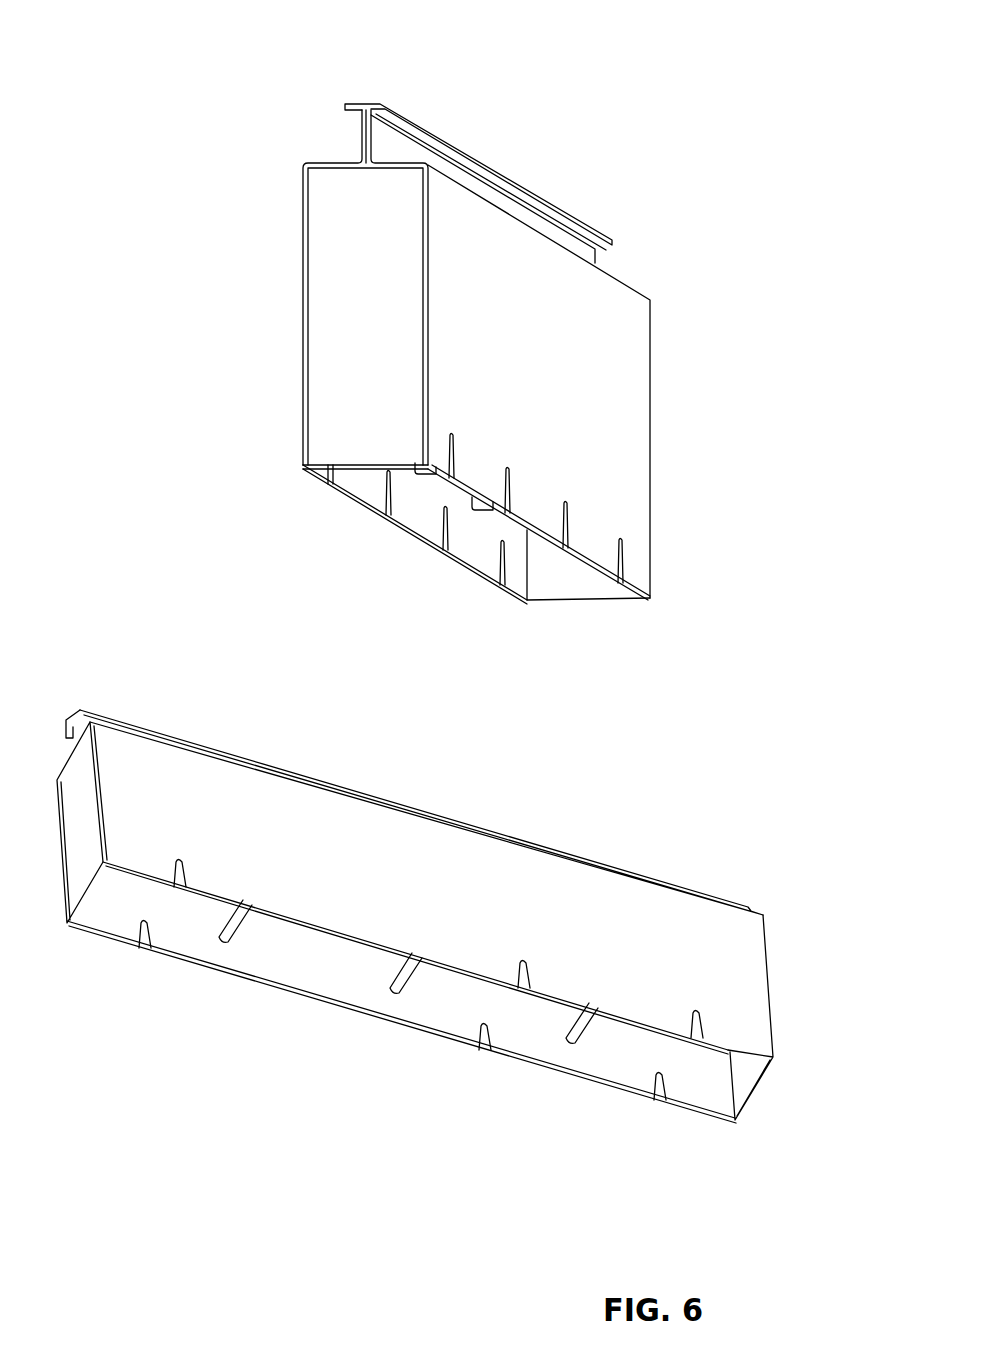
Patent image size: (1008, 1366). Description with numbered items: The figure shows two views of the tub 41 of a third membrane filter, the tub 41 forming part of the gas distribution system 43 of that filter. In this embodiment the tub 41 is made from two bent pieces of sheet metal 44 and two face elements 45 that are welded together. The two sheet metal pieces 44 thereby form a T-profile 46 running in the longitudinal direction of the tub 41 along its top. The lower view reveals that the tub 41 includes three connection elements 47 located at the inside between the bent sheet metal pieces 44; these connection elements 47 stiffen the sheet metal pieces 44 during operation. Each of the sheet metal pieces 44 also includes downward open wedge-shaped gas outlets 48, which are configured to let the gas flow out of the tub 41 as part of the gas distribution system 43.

The tub 41 is at (507, 387).
The gas distribution system 43 is at (694, 234).
The bent pieces of sheet metal 44 is at (370, 483).
The face elements 45 is at (332, 332).
The T-profile 46 is at (352, 101).
The connection elements 47 is at (233, 931).
The wedge-shaped gas outlets 48 is at (622, 570).